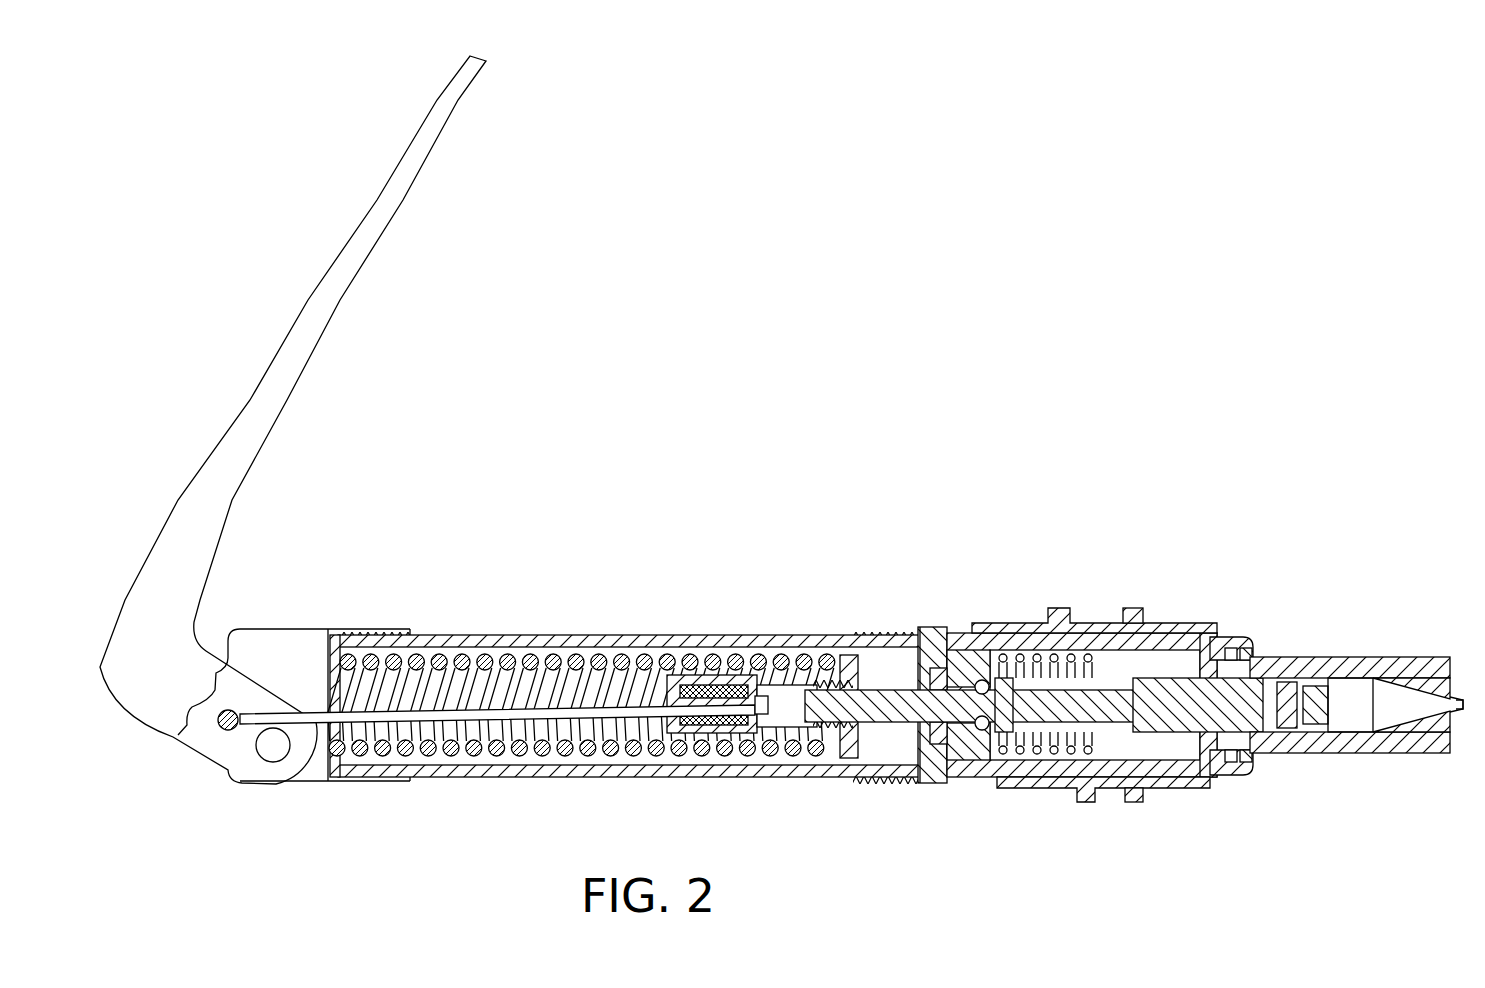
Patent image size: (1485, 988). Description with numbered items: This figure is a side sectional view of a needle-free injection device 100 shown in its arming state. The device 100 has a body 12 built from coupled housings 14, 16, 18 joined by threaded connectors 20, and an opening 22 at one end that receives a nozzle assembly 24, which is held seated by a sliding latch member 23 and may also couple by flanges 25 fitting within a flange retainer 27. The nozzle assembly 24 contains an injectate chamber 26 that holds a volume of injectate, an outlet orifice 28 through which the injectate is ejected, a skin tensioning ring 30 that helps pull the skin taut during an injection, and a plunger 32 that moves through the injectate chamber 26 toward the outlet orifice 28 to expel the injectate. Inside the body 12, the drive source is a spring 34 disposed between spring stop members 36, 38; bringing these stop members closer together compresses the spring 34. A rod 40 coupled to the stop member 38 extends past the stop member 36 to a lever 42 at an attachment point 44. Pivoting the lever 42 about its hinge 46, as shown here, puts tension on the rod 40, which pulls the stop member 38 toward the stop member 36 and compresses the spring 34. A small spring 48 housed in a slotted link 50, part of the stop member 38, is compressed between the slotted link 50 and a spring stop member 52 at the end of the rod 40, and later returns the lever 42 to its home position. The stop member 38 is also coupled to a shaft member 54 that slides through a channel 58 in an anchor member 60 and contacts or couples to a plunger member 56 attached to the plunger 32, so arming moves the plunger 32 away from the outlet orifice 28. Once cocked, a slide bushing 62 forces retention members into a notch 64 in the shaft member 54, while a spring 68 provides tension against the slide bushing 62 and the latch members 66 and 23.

The needle-free injection device 100 is at (192, 442).
The body 12 is at (803, 788).
The housing 14 is at (383, 783).
The housing 16 is at (578, 778).
The housing 18 is at (922, 785).
The threaded connectors 20 is at (378, 637).
The opening 22 is at (1255, 657).
The latch member 23 is at (1188, 790).
The nozzle assembly 24 is at (1343, 633).
The flanges 25 is at (1236, 650).
The injectate chamber 26 is at (1353, 713).
The flange retainer 27 is at (1250, 650).
The outlet orifice 28 is at (1458, 703).
The skin tensioning ring 30 is at (1450, 753).
The plunger 32 is at (1317, 723).
The spring 34 is at (492, 653).
The spring stop member 36 is at (333, 680).
The spring stop member 38 is at (838, 652).
The rod 40 is at (550, 710).
The lever 42 is at (262, 375).
The attachment point 44 is at (217, 723).
The hinge 46 is at (267, 752).
The small spring 48 is at (717, 665).
The slotted link 50 is at (726, 733).
The spring stop member 52 is at (772, 728).
The shaft member 54 is at (955, 690).
The plunger member 56 is at (1165, 690).
The channel 58 is at (921, 640).
The anchor member 60 is at (937, 783).
The slide bushing 62 is at (985, 680).
The notch 64 is at (1006, 735).
The latch member 66 is at (1058, 608).
The spring 68 is at (1076, 660).